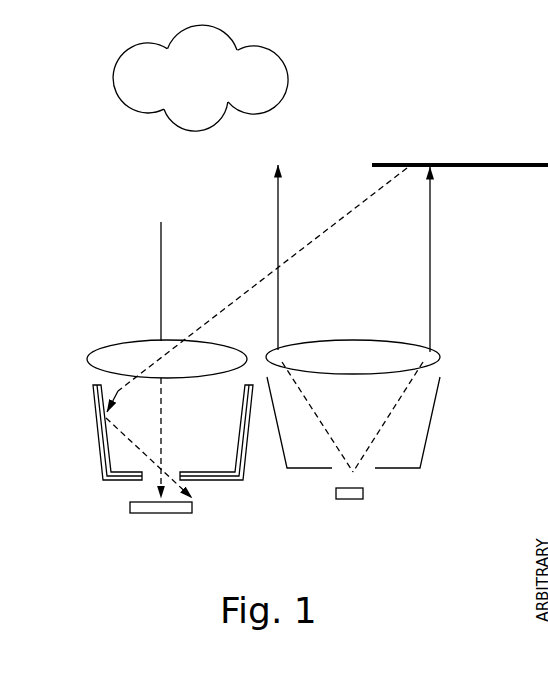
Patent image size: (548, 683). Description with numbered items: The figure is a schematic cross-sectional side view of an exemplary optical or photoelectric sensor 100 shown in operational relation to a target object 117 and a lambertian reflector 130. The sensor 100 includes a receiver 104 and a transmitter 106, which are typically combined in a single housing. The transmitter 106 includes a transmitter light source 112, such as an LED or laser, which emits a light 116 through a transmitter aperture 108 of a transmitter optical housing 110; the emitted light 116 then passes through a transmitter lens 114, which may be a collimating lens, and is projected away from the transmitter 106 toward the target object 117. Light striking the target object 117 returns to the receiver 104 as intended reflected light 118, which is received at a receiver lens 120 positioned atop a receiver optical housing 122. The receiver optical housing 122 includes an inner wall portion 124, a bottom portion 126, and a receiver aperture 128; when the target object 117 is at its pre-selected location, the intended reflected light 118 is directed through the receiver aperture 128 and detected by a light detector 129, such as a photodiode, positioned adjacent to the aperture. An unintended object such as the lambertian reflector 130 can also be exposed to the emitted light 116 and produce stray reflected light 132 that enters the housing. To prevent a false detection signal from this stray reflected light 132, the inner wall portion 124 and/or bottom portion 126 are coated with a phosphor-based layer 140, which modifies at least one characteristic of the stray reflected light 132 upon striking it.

The photoelectric sensor 100 is at (285, 521).
The receiver 104 is at (88, 428).
The transmitter 106 is at (472, 378).
The transmitter aperture 108 is at (341, 473).
The transmitter optical housing 110 is at (433, 418).
The transmitter light source 112 is at (364, 493).
The transmitter lens 114 is at (354, 339).
The emitted light 116 is at (279, 201).
The target object 117 is at (200, 78).
The intended reflected light 118 is at (163, 237).
The receiver lens 120 is at (127, 343).
The receiver optical housing 122 is at (101, 462).
The inner wall portion 124 is at (93, 407).
The bottom portion 126 is at (210, 481).
The receiver aperture 128 is at (137, 488).
The light detector 129 is at (160, 514).
The lambertian reflector 130 is at (528, 170).
The stray reflected light 132 is at (233, 297).
The phosphor-based layer 140 is at (98, 386).